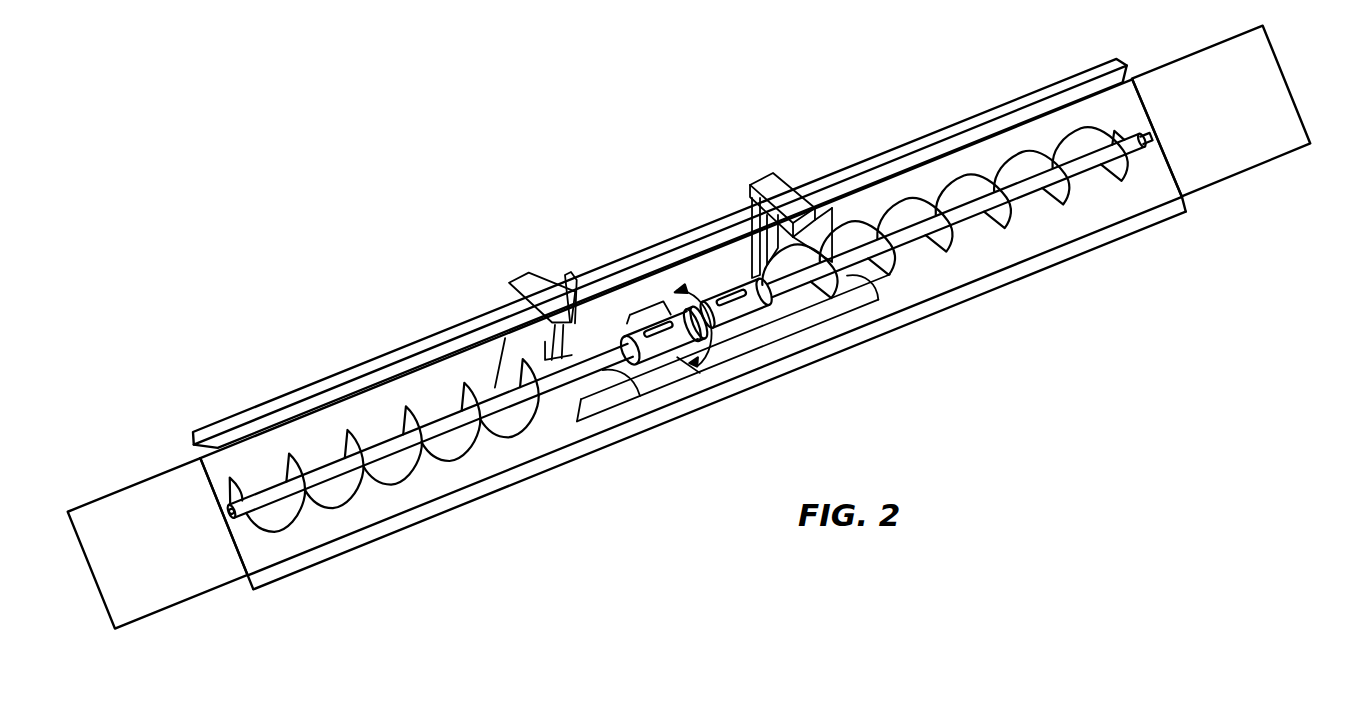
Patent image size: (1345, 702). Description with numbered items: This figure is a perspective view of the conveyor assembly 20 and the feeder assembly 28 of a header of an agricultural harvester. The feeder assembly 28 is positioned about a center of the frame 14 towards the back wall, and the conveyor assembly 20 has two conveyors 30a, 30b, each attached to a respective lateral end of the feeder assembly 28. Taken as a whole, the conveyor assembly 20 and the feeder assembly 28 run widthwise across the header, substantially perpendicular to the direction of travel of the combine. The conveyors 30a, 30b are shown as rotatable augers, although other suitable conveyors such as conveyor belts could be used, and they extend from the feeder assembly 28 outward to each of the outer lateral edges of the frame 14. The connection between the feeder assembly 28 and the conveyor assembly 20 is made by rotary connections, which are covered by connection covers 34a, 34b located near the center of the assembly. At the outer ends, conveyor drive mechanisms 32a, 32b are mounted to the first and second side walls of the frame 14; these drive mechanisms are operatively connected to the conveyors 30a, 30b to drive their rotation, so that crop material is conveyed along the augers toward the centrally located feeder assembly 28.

The frame 14 is at (920, 140).
The conveyor assembly 20 is at (410, 318).
The feeder assembly 28 is at (691, 391).
The conveyor 30a is at (423, 477).
The conveyor 30b is at (971, 256).
The conveyor drive mechanism 32a is at (182, 603).
The conveyor drive mechanism 32b is at (1247, 172).
The connection cover 34a is at (643, 364).
The connection cover 34b is at (767, 303).